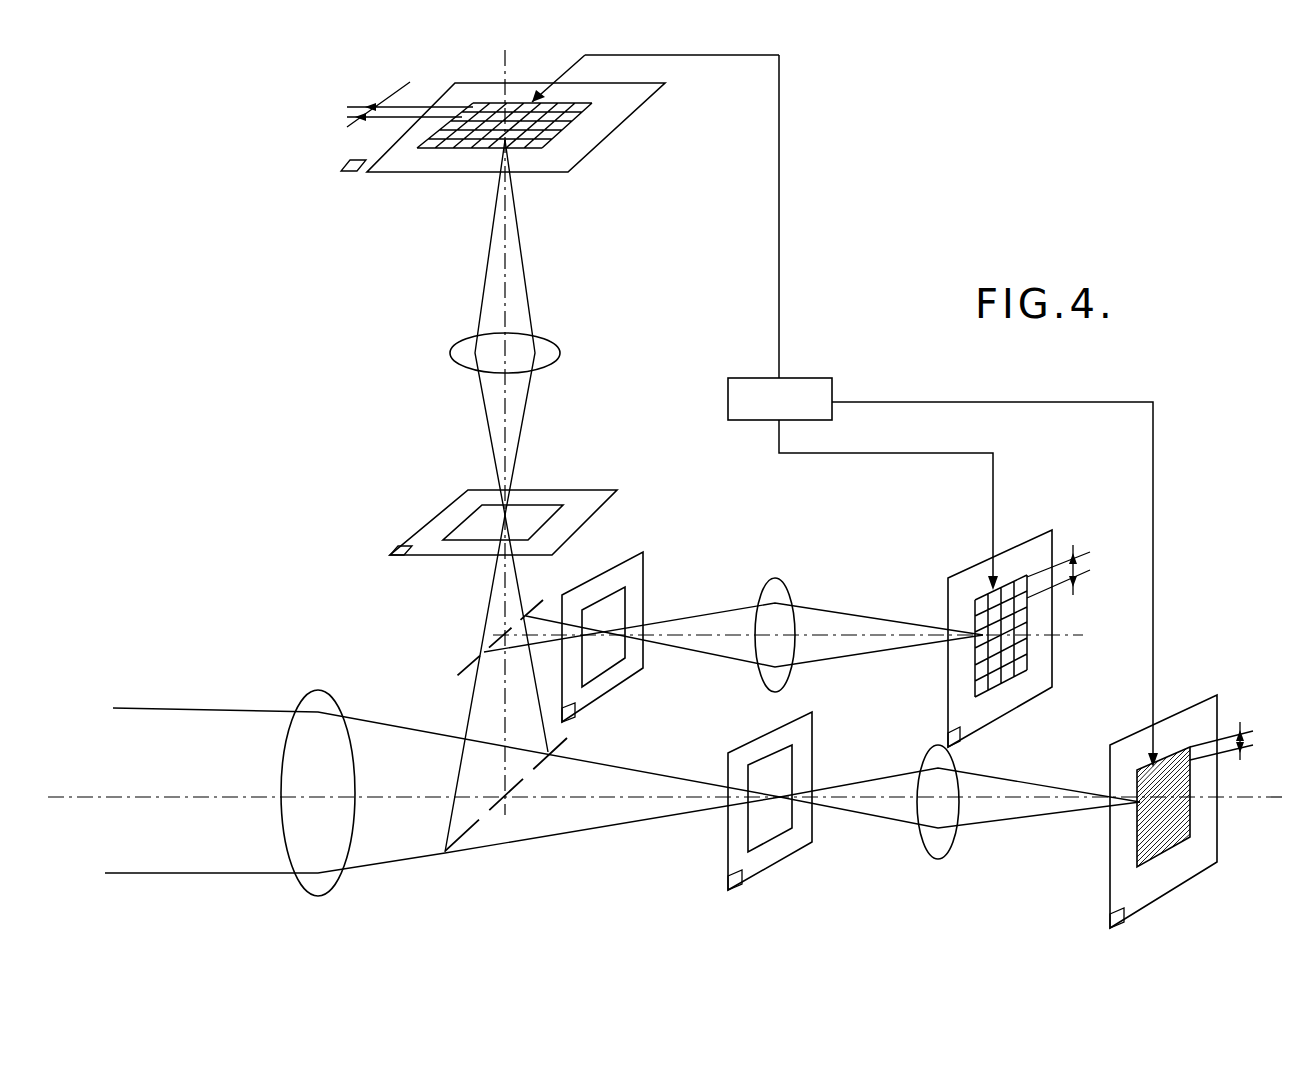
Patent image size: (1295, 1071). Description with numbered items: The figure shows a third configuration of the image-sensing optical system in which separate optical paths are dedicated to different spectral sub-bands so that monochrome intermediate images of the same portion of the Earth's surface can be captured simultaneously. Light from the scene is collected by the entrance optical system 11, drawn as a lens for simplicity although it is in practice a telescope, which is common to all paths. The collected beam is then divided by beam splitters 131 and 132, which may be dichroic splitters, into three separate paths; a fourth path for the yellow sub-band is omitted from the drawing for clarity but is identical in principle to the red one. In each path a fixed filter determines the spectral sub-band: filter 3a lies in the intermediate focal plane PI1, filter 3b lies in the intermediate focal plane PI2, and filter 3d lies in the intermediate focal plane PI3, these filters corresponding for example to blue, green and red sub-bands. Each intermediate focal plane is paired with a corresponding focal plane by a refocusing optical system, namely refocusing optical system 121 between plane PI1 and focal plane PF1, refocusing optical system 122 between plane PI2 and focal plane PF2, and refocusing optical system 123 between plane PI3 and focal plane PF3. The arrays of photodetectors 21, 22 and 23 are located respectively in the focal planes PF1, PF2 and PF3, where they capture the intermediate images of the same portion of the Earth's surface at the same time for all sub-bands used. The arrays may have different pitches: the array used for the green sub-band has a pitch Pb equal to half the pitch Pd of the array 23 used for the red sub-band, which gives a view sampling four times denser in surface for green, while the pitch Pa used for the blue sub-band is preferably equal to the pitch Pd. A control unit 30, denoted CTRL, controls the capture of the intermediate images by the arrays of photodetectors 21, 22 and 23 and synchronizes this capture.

The entrance optical system 11 is at (306, 695).
The refocusing optical system 121 is at (923, 848).
The refocusing optical system 122 is at (790, 582).
The refocusing optical system 123 is at (560, 349).
The beam splitter 131 is at (430, 868).
The beam splitter 132 is at (463, 672).
The filter 3a is at (742, 828).
The filter 3b is at (655, 577).
The filter 3d is at (540, 502).
The array of photodetectors 21 is at (1167, 753).
The array of photodetectors 22 is at (1000, 585).
The array of photodetectors 23 is at (553, 130).
The focal plane PF1 is at (1110, 916).
The focal plane PF2 is at (950, 738).
The focal plane PF3 is at (368, 165).
The intermediate focal plane PI1 is at (728, 883).
The intermediate focal plane PI2 is at (577, 713).
The intermediate focal plane PI3 is at (396, 549).
The pitch Pa is at (1064, 560).
The pitch Pb is at (1228, 726).
The pitch Pd is at (410, 94).
The control unit 30 is at (812, 378).